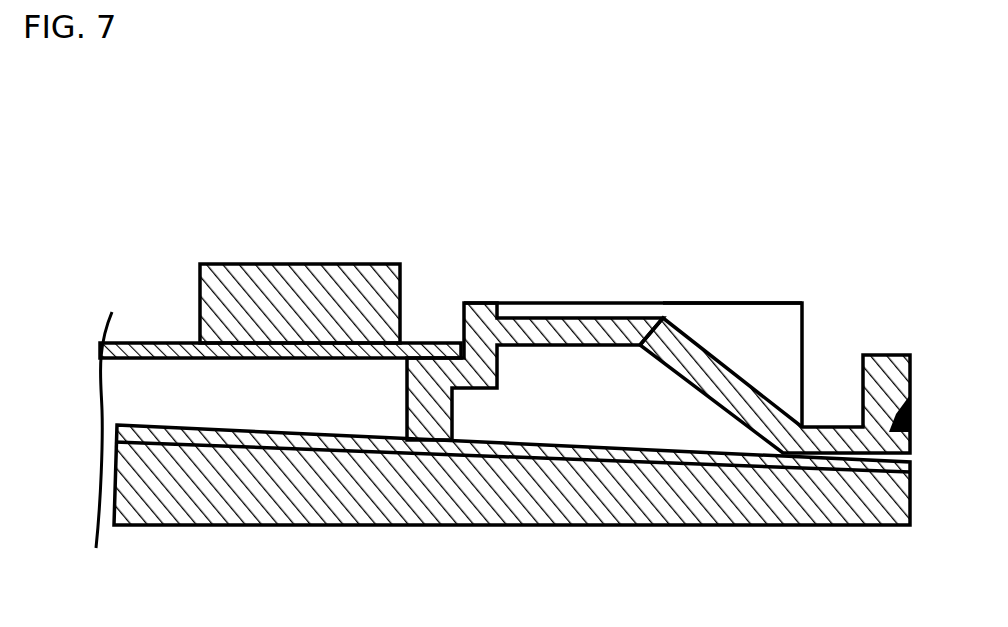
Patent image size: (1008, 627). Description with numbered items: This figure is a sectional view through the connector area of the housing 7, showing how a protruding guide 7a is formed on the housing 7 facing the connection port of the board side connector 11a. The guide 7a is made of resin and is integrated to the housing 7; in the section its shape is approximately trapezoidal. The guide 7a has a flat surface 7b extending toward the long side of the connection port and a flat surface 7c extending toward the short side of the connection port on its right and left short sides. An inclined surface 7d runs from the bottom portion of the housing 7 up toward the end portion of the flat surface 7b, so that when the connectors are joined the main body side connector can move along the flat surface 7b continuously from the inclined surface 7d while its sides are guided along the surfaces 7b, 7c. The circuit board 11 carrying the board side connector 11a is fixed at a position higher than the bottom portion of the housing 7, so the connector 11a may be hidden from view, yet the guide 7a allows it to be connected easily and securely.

The housing 7 is at (473, 526).
The guide 7a is at (616, 298).
The flat surface 7b is at (524, 318).
The flat surface 7c is at (712, 303).
The inclined surface 7d is at (720, 348).
The circuit board 11 is at (158, 342).
The board side connector 11a is at (284, 263).